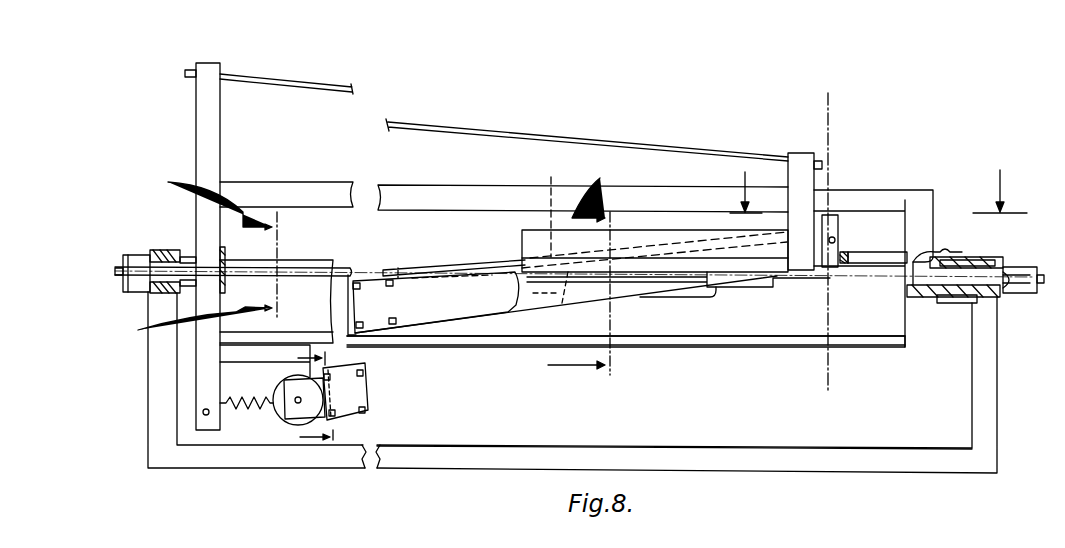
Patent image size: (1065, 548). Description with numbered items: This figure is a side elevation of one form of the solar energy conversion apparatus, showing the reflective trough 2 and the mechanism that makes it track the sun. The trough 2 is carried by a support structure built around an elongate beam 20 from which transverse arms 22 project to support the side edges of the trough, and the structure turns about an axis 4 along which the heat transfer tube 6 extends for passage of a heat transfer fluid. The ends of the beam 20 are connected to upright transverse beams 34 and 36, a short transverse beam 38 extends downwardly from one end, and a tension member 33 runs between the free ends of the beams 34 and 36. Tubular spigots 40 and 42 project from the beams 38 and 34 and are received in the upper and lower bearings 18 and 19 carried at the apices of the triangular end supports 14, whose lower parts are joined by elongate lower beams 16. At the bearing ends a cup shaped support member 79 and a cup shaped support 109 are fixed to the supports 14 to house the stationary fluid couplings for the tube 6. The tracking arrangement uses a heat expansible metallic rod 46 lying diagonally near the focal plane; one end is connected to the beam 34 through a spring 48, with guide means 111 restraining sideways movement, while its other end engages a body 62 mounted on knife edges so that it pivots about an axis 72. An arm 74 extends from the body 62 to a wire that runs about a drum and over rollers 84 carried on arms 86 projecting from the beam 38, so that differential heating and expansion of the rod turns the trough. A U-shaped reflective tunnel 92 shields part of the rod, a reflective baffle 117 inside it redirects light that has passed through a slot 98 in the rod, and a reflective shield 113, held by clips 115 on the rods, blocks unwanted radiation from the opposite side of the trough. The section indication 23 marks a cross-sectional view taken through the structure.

The reflective trough 2 is at (890, 315).
The axis 4 is at (352, 272).
The heat transfer tube 6 is at (256, 268).
The triangular end supports 14 is at (155, 350).
The lower beams 16 is at (917, 460).
The upper bearing 18 is at (740, 184).
The lower bearing 19 is at (160, 250).
The elongate beam 20 is at (292, 192).
The transverse arms 22 is at (295, 362).
The section line 23 is at (191, 253).
The tension member 33 is at (293, 78).
The upright transverse beam 34 is at (196, 105).
The upright transverse beam 36 is at (800, 160).
The short transverse beam 38 is at (928, 196).
The tubular spigot 40 is at (988, 300).
The tubular spigot 42 is at (190, 256).
The heat expansible metallic rod 46 is at (368, 397).
The spring 48 is at (245, 412).
The body 62 is at (840, 214).
The axis 72 is at (830, 115).
The arm 74 is at (883, 255).
The cup shaped support member 79 is at (1003, 294).
The rollers 84 is at (957, 253).
The arms 86 is at (935, 250).
The reflective tunnel 92 is at (524, 243).
The slot 98 is at (573, 283).
The cup shaped support 109 is at (124, 256).
The guide means 111 is at (298, 422).
The reflective shield 113 is at (456, 310).
The clips 115 is at (393, 326).
The reflective baffle 117 is at (538, 205).